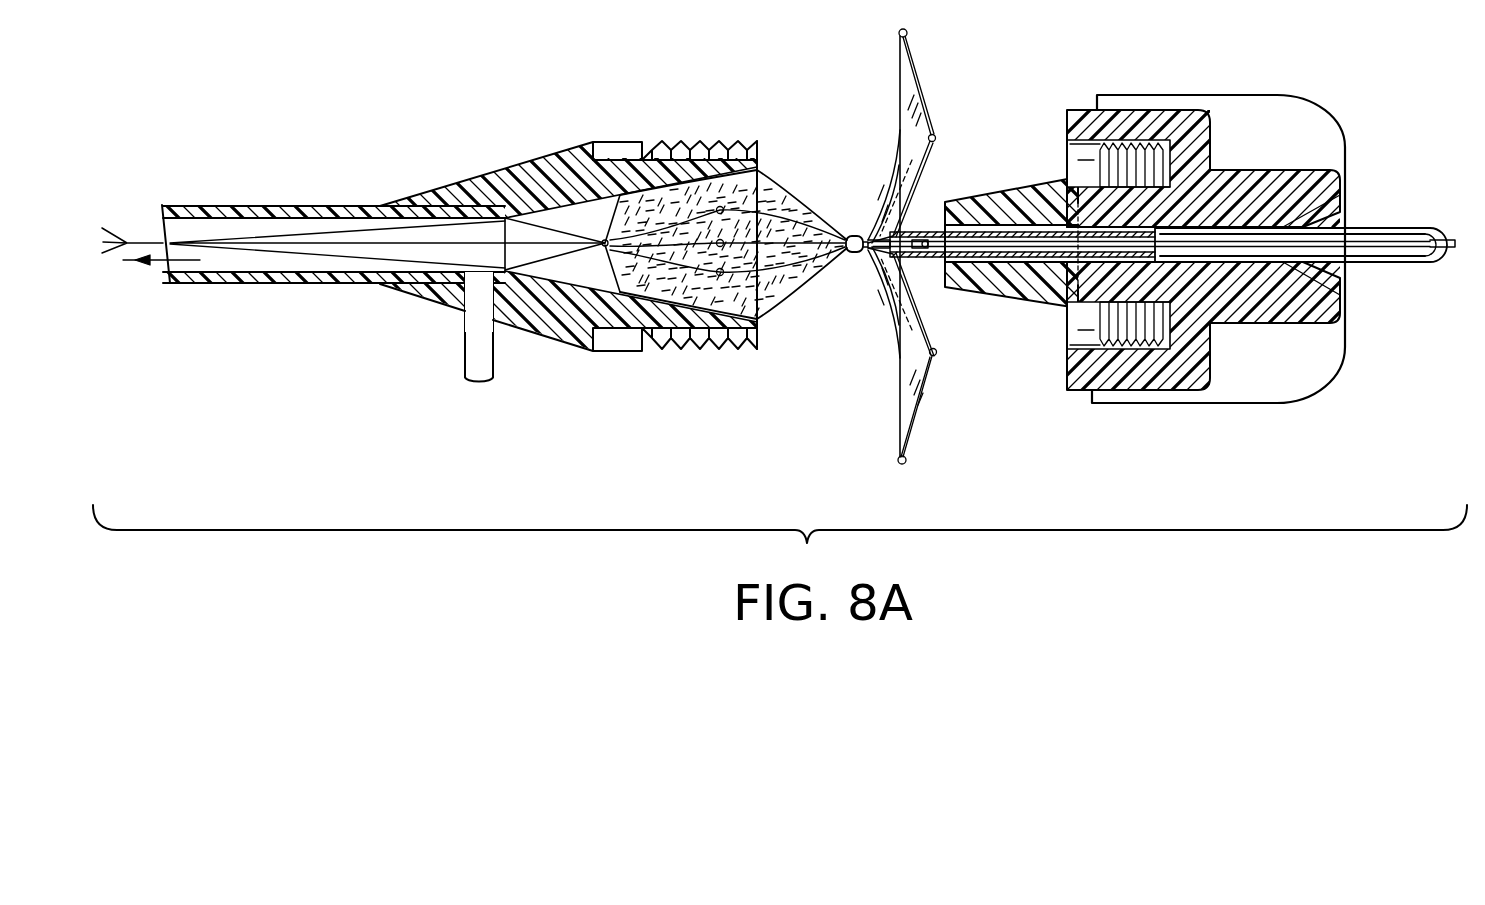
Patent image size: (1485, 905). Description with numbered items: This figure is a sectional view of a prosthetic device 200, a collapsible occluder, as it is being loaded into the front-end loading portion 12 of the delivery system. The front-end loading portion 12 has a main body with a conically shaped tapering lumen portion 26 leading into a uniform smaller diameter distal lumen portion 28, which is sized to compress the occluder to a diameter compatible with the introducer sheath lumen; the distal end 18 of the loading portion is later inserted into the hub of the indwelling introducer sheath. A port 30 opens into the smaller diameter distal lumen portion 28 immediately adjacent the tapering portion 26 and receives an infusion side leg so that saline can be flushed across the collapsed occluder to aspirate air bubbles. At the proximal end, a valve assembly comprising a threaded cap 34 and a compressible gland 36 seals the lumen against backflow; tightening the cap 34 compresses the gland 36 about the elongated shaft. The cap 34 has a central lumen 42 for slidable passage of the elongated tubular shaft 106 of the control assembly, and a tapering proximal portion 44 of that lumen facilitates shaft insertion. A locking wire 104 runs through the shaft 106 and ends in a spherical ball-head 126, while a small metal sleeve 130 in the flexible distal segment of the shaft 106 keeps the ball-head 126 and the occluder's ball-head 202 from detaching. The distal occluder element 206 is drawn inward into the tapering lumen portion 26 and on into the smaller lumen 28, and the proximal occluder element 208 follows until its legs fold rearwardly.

The front-end loading portion 12 is at (600, 131).
The distal end 18 is at (197, 286).
The tapering lumen portion 26 is at (558, 222).
The smaller diameter distal lumen portion 28 is at (230, 226).
The port 30 is at (483, 294).
The threaded cap 34 is at (1175, 96).
The compressible gland 36 is at (1027, 287).
The central lumen 42 is at (1277, 207).
The tapering proximal portion 44 is at (1337, 277).
The locking wire 104 is at (1023, 233).
The elongated tubular shaft 106 is at (1368, 227).
The ball-head 126 is at (922, 238).
The small metal sleeve 130 is at (983, 215).
The prosthetic device 200 is at (826, 101).
The ball-head 202 is at (933, 252).
The distal occluder element 206 is at (782, 276).
The proximal occluder element 208 is at (887, 312).